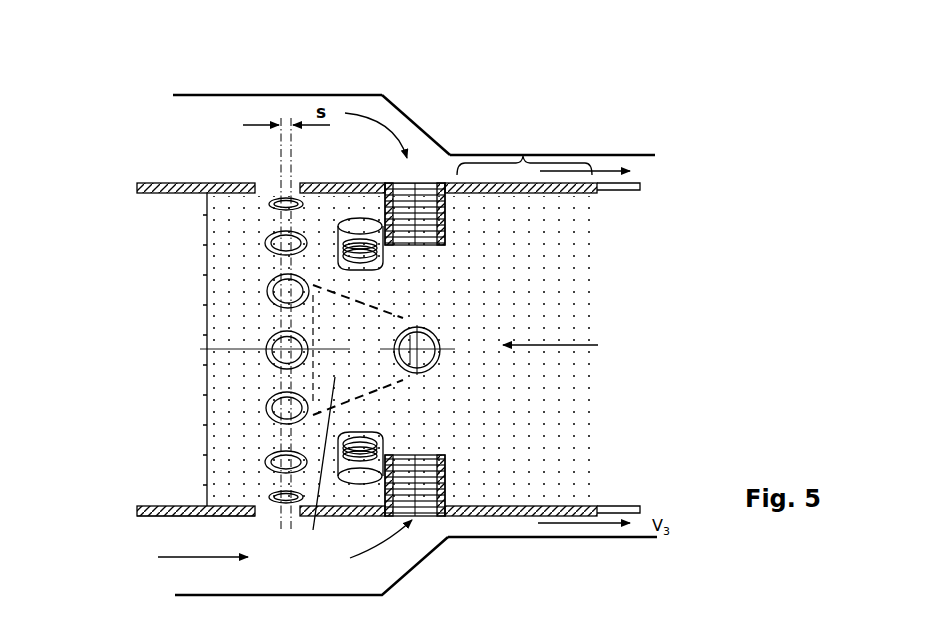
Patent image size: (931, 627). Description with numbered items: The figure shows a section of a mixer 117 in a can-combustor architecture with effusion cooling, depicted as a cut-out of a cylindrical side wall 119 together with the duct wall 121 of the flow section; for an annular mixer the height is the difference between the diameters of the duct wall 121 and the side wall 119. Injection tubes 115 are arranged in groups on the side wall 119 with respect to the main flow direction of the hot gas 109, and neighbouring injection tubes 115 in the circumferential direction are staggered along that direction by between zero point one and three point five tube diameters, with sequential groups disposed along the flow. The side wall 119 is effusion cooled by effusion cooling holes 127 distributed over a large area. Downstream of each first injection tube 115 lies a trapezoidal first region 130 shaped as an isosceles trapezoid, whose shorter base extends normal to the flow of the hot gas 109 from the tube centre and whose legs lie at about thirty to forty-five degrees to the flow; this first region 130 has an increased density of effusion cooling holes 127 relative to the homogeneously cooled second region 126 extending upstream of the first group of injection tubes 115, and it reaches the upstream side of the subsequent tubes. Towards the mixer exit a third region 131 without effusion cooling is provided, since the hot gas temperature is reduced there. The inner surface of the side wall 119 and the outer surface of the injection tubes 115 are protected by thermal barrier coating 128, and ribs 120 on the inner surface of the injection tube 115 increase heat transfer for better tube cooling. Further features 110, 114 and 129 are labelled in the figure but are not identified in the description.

The hot gas 109 is at (550, 333).
The flow direction of drying medium 110 is at (203, 559).
The inclined duct wall 114 is at (403, 112).
The injection tubes 115 is at (273, 257).
The mixer 117 is at (173, 348).
The side wall 119 is at (498, 517).
The ribs 120 is at (422, 503).
The duct wall 121 is at (257, 92).
The second region 126 is at (543, 146).
The effusion cooling holes 127 is at (577, 412).
The thermal barrier coating 128 is at (525, 507).
The upper outlet wall 129 is at (573, 153).
The first region 130 is at (340, 425).
The third region 131 is at (170, 415).